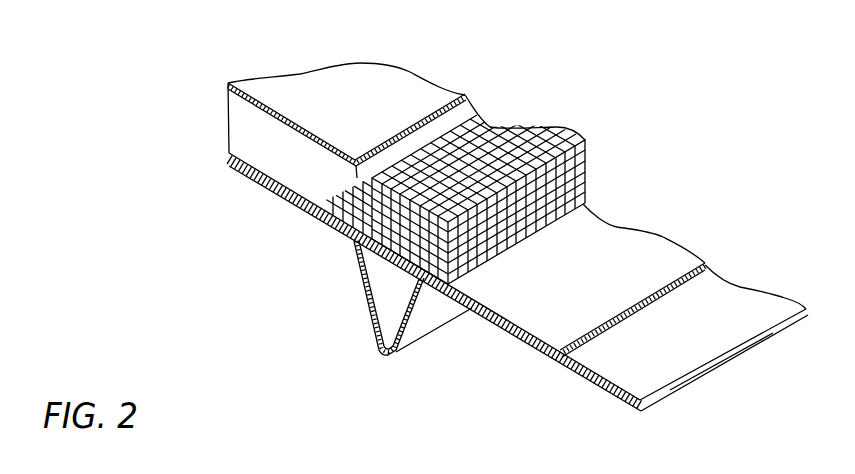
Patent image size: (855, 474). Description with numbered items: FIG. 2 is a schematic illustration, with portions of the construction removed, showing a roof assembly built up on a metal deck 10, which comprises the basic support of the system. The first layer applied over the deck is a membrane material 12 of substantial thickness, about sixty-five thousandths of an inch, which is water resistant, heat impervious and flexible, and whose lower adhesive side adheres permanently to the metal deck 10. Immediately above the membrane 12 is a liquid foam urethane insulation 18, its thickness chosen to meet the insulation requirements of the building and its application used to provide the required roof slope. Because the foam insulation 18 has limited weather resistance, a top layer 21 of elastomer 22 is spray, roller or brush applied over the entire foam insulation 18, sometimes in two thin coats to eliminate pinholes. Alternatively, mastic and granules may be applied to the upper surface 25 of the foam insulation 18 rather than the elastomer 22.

The metal deck 10 is at (739, 309).
The membrane material 12 is at (649, 253).
The foam urethane insulation 18 is at (571, 169).
The top layer 21 is at (401, 88).
The elastomer 22 is at (228, 83).
The upper surface of foam insulation 25 is at (492, 137).